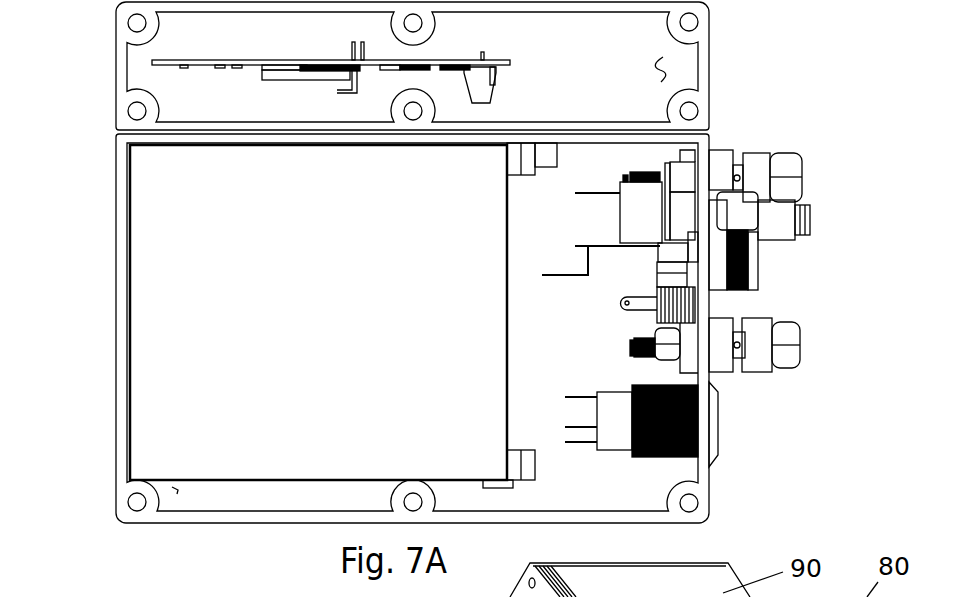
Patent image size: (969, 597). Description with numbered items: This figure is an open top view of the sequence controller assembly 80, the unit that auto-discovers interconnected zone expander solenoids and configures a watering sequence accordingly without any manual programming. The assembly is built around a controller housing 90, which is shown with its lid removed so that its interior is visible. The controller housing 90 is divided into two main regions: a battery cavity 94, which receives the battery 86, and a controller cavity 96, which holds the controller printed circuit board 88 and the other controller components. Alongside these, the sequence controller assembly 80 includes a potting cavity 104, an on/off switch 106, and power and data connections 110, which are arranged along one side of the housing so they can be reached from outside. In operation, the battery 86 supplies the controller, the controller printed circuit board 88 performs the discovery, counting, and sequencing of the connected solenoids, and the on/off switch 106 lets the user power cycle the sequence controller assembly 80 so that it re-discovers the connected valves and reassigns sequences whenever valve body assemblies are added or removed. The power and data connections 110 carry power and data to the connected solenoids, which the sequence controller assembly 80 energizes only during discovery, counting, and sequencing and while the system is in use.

The sequence controller assembly 80 is at (737, 25).
The battery 86 is at (180, 369).
The controller printed circuit board 88 is at (243, 60).
The controller housing 90 is at (116, 195).
The battery cavity 94 is at (178, 490).
The controller cavity 96 is at (667, 70).
The potting cavity 104 is at (555, 148).
The on/off switch 106 is at (718, 418).
The power and data connections 110 is at (802, 178).